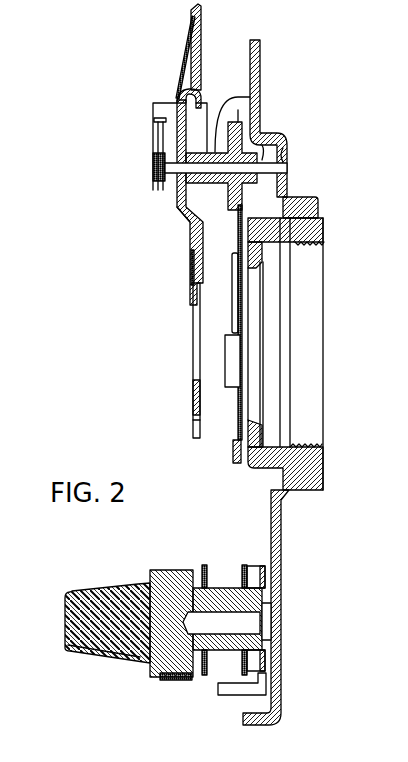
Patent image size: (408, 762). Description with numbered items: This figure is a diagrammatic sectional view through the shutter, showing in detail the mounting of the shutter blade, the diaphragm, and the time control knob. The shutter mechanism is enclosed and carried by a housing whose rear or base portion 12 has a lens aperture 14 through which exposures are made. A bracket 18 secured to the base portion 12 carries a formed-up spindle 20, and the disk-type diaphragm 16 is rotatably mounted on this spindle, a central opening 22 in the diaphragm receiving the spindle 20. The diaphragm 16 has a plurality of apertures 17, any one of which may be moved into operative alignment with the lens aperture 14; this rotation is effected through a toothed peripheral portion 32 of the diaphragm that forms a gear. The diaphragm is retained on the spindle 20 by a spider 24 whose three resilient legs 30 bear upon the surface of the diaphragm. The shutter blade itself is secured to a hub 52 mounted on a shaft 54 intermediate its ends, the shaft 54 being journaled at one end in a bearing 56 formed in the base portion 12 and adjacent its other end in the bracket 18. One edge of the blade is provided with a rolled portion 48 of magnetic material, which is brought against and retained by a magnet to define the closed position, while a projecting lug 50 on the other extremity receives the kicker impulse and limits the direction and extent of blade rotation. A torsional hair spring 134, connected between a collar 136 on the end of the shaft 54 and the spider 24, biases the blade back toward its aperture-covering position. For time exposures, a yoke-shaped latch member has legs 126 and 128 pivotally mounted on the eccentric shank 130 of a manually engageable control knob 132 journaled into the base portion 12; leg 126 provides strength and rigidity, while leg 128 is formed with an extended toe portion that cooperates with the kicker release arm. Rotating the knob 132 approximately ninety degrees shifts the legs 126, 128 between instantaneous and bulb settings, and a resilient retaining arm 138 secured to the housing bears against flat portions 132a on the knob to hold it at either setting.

The base portion 12 is at (283, 531).
The lens aperture 14 is at (261, 393).
The diaphragm 16 is at (191, 393).
The apertures 17 is at (192, 370).
The bracket 18 is at (203, 30).
The spindle 20 is at (185, 95).
The opening 22 is at (192, 93).
The spider 24 is at (176, 212).
The resilient legs 30 is at (190, 30).
The toothed peripheral portion 32 is at (193, 428).
The rolled portion 48 is at (232, 290).
The lug 50 is at (232, 455).
The hub 52 is at (252, 96).
The shaft 54 is at (273, 134).
The bearing 56 is at (289, 150).
The leg 126 is at (200, 565).
The leg 128 is at (250, 566).
The eccentric shank 130 is at (220, 588).
The control knob 132 is at (90, 662).
The flat portions 132a is at (150, 676).
The torsional hair spring 134 is at (158, 195).
The collar 136 is at (155, 173).
The retaining arm 138 is at (175, 682).